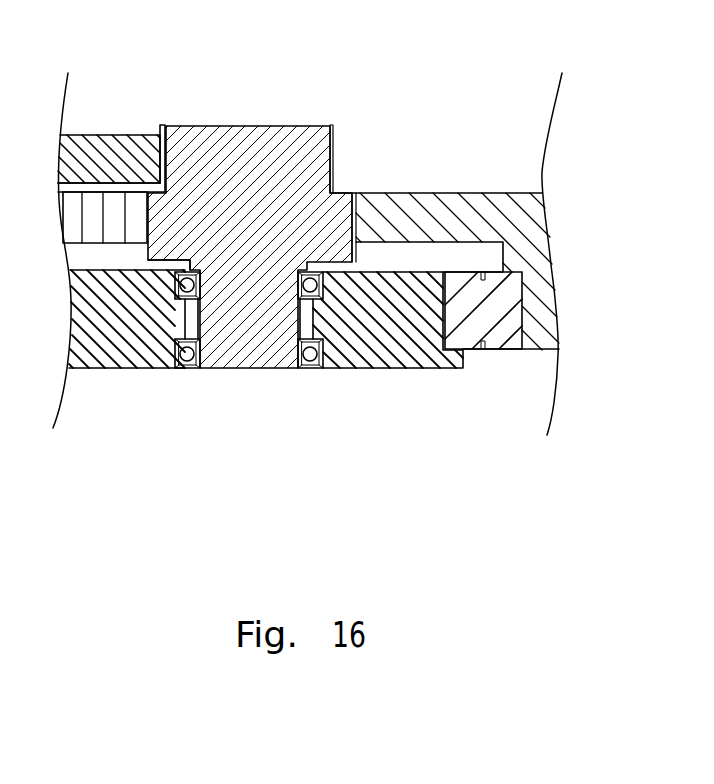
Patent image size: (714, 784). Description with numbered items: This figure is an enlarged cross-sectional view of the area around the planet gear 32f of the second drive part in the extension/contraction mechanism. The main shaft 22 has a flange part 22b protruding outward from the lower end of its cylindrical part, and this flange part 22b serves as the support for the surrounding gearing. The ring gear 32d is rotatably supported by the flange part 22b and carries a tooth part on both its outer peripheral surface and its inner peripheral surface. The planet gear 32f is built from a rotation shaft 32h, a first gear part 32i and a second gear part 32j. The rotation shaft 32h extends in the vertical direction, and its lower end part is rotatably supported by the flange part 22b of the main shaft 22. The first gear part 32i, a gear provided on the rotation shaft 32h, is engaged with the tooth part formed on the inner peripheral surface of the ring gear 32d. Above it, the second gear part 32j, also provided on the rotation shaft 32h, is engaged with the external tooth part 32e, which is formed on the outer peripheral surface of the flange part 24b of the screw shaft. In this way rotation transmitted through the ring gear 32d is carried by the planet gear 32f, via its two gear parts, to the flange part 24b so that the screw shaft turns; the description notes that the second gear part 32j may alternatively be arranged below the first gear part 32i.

The main shaft 22 is at (425, 373).
The flange part 22b is at (375, 352).
The flange part 24b is at (112, 145).
The ring gear 32d is at (470, 194).
The external tooth part 32e is at (150, 157).
The planet gear 32f is at (340, 145).
The rotation shaft 32h is at (245, 353).
The first gear part 32i is at (168, 252).
The second gear part 32j is at (253, 147).